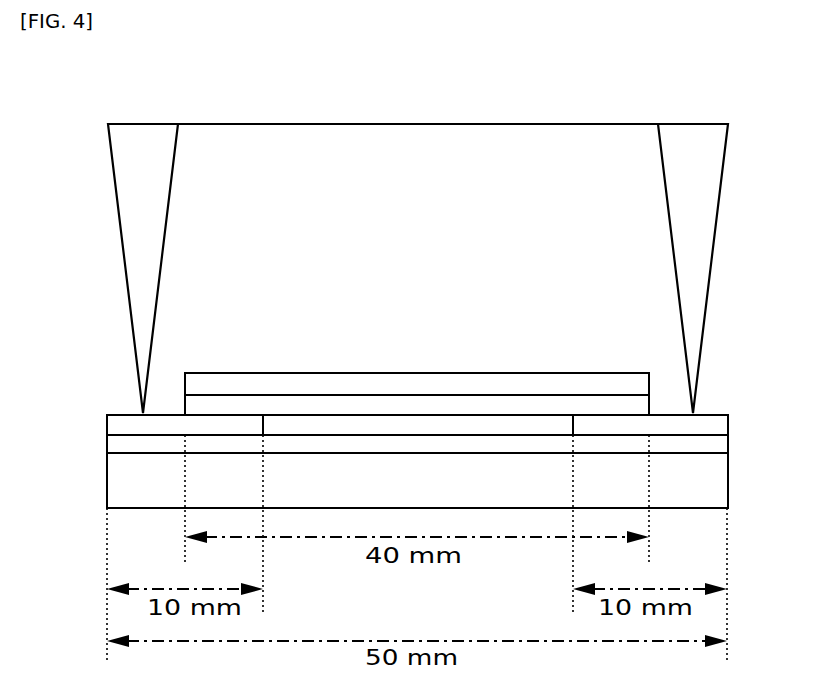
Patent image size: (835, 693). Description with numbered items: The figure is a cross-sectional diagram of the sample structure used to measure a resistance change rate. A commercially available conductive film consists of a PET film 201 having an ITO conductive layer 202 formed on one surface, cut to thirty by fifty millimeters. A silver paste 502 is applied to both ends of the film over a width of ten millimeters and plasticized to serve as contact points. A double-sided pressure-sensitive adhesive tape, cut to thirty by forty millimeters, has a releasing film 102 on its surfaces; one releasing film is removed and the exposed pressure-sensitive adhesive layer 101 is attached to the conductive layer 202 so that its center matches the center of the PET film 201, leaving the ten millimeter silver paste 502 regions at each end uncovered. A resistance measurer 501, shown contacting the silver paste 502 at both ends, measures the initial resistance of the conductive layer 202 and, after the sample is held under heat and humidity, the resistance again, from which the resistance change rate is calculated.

The resistance measurer 501 is at (505, 101).
The silver paste 502 is at (113, 428).
The releasing film 102 is at (406, 385).
The pressure-sensitive adhesive layer 101 is at (488, 410).
The ITO conductive layer 202 is at (113, 443).
The PET film 201 is at (716, 480).